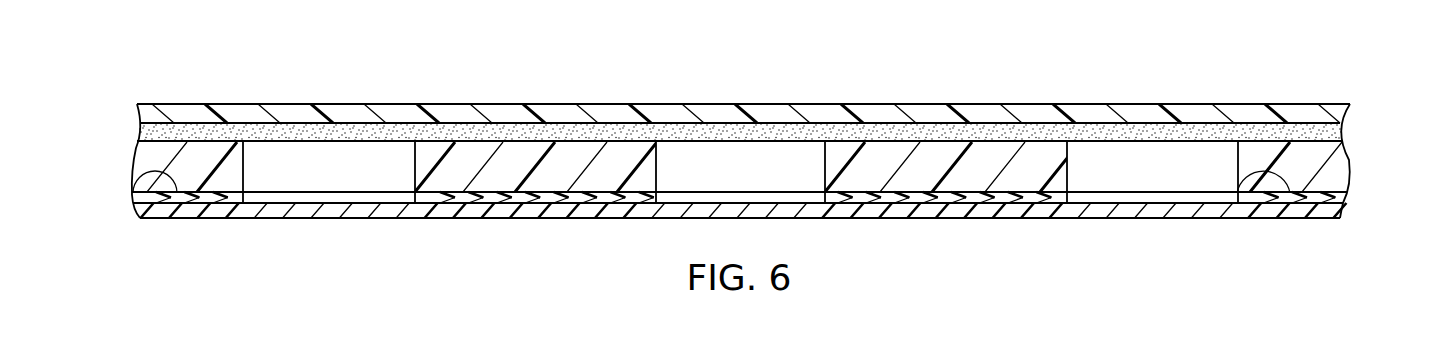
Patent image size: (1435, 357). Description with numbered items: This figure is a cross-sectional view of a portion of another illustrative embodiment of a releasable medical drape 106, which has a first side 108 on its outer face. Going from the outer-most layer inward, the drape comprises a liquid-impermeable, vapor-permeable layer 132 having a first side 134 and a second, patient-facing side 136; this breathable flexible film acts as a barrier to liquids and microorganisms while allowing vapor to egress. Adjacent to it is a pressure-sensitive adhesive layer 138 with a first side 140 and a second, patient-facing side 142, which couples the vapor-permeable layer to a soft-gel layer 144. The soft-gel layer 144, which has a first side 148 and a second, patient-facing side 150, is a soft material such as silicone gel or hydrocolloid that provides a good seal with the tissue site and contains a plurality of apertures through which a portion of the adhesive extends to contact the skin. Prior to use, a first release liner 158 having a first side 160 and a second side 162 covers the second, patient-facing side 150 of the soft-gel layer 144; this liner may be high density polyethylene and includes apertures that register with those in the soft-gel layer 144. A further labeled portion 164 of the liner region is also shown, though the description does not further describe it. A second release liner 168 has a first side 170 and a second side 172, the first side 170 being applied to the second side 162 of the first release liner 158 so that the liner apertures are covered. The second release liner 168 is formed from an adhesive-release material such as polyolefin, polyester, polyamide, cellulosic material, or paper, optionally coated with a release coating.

The releasable medical drape 106 is at (233, 104).
The first side 108 is at (880, 107).
The liquid-impermeable, vapor-permeable layer 132 is at (455, 113).
The first side 134 is at (1297, 103).
The second, patient-facing side 136 is at (1340, 127).
The pressure-sensitive adhesive layer 138 is at (140, 130).
The first side 140 is at (152, 113).
The second, patient-facing side 142 is at (150, 143).
The soft-gel layer 144 is at (1343, 170).
The first side 148 is at (1010, 137).
The second, patient-facing side 150 is at (1347, 203).
The first release liner 158 is at (442, 197).
The first side 160 is at (140, 176).
The second side 162 is at (583, 205).
The chevron layer third segment 164 is at (975, 200).
The second release liner 168 is at (893, 210).
The first side 170 is at (1240, 170).
The second side 172 is at (1255, 218).